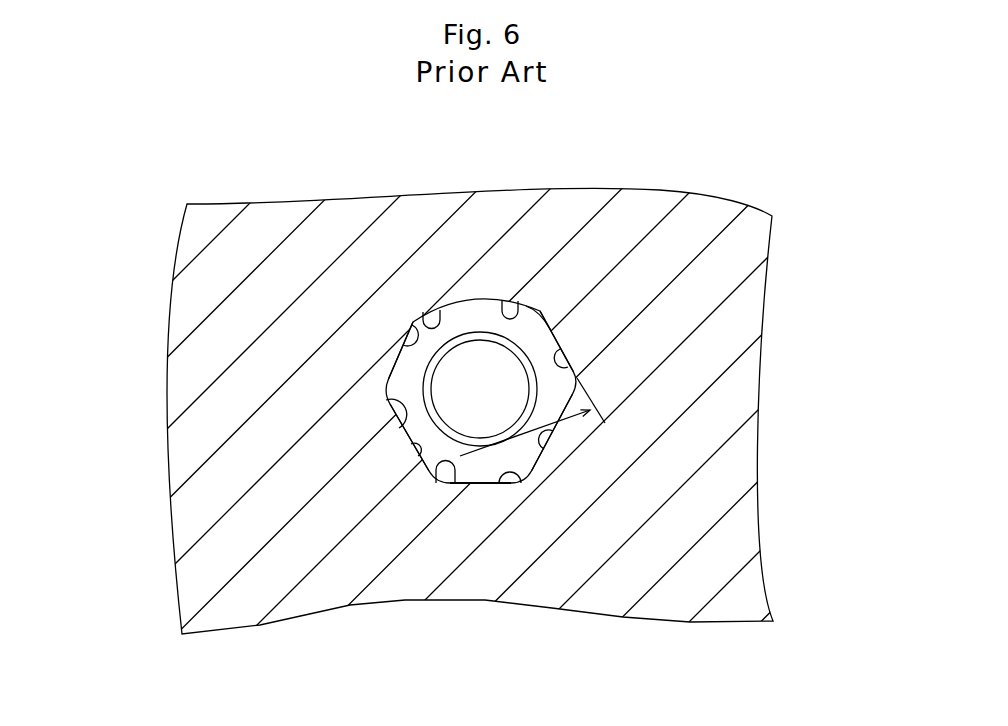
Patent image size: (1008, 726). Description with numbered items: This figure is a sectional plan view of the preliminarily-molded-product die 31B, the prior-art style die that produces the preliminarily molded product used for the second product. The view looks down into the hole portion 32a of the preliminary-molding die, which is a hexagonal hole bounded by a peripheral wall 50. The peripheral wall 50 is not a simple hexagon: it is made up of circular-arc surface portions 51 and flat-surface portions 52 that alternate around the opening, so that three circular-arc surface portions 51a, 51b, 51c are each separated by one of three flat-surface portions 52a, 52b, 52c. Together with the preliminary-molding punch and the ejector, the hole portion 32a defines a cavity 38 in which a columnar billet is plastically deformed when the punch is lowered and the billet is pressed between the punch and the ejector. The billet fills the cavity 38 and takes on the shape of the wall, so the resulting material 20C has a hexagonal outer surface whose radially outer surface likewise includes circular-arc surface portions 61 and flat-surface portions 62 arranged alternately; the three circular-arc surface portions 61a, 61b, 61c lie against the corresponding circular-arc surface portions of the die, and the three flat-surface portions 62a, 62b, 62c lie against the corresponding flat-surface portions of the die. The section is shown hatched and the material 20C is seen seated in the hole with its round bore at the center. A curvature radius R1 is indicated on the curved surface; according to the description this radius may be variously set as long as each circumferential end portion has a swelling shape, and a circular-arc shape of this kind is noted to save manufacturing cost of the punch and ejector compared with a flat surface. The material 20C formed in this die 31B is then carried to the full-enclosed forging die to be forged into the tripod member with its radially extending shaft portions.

The preliminarily-molded-product die 31B is at (760, 400).
The cavity 38 is at (443, 486).
The peripheral wall 50 is at (450, 459).
The material 20C is at (476, 323).
The hole portion 32a is at (447, 313).
The circular-arc surface portions 51 is at (460, 353).
The circular-arc surface portion 51a is at (545, 300).
The circular-arc surface portion 51b is at (550, 428).
The circular-arc surface portion 51c is at (384, 393).
The flat-surface portions 52 is at (460, 463).
The flat-surface portion 52a is at (556, 356).
The flat-surface portion 52b is at (523, 483).
The flat-surface portion 52c is at (413, 320).
The circular-arc surface portions 61 is at (460, 325).
The circular-arc surface portion 61a is at (502, 301).
The circular-arc surface portion 61b is at (550, 458).
The circular-arc surface portion 61c is at (409, 450).
The flat-surface portions 62 is at (460, 473).
The flat-surface portion 62a is at (553, 337).
The flat-surface portion 62b is at (458, 485).
The flat-surface portion 62c is at (398, 352).
The curvature radius R1 is at (532, 417).